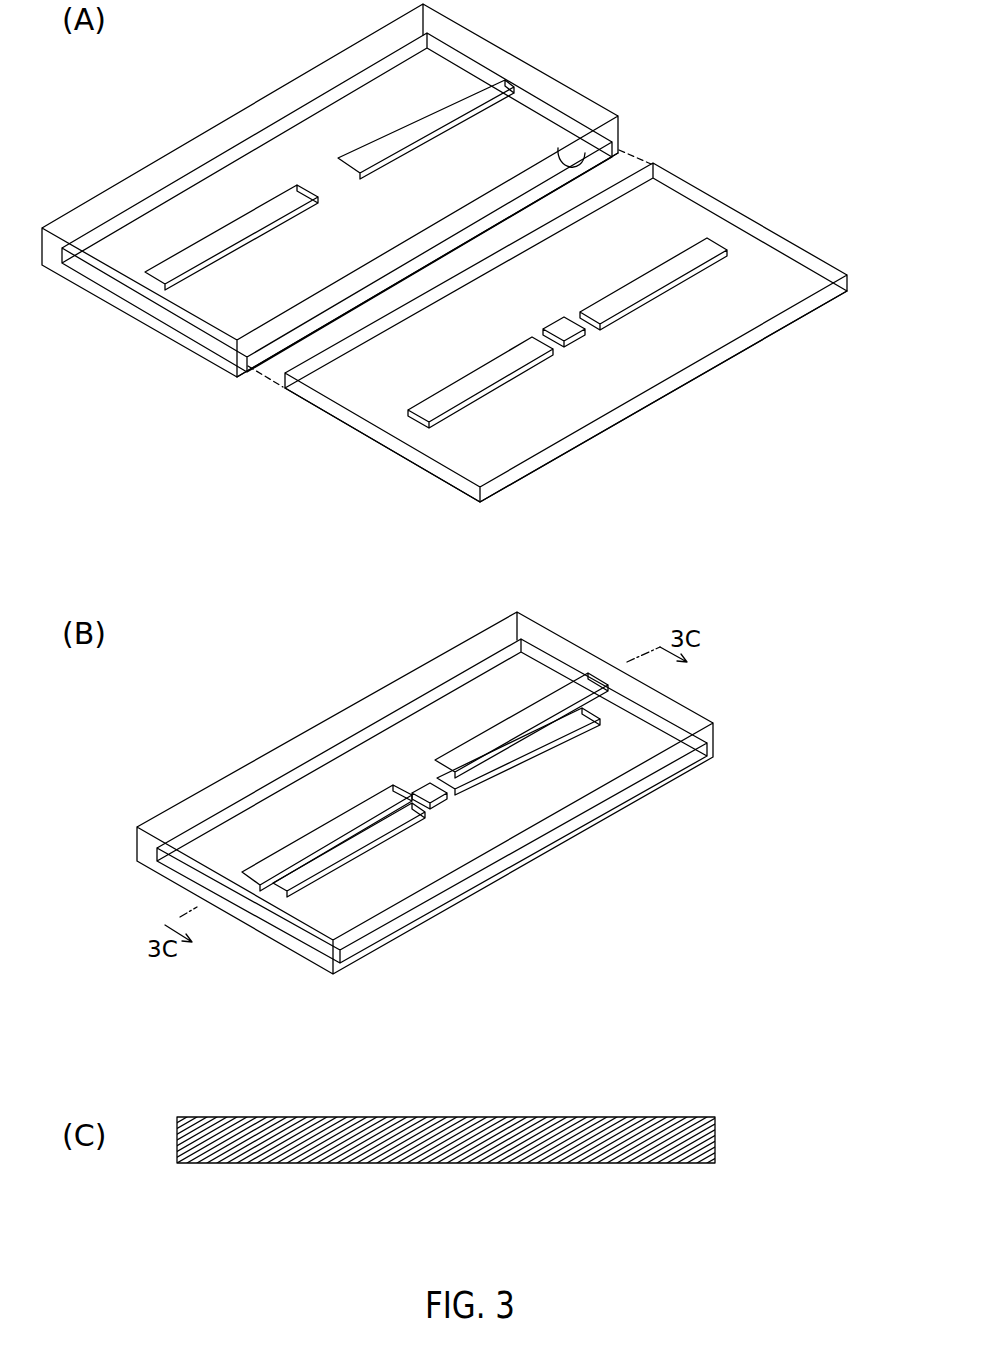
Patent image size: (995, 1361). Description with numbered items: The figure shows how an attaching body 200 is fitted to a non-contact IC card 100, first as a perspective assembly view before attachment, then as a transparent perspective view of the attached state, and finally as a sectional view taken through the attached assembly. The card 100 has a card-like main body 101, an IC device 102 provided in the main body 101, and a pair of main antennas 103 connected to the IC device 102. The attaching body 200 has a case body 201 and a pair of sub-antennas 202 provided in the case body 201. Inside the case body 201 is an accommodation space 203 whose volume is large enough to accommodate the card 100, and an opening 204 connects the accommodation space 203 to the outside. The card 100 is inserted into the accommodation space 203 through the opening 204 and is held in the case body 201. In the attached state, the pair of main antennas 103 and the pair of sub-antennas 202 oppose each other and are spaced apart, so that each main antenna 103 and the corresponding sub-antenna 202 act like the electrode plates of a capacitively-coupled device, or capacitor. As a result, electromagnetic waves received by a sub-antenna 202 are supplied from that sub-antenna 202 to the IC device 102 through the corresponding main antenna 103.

The non-contact IC card 100 is at (722, 203).
The main body 101 is at (566, 396).
The IC device 102 is at (568, 332).
The main antennas 103 is at (426, 412).
The attaching body 200 is at (240, 114).
The case body 201 is at (384, 498).
The sub-antennas 202 is at (428, 115).
The accommodation space 203 is at (272, 343).
The opening 204 is at (558, 148).